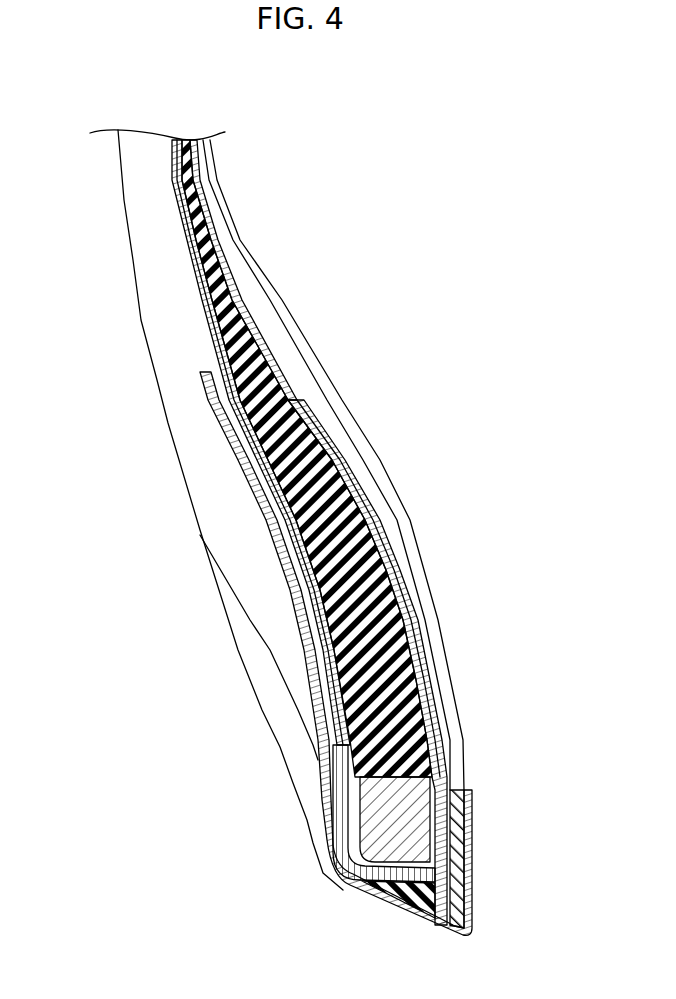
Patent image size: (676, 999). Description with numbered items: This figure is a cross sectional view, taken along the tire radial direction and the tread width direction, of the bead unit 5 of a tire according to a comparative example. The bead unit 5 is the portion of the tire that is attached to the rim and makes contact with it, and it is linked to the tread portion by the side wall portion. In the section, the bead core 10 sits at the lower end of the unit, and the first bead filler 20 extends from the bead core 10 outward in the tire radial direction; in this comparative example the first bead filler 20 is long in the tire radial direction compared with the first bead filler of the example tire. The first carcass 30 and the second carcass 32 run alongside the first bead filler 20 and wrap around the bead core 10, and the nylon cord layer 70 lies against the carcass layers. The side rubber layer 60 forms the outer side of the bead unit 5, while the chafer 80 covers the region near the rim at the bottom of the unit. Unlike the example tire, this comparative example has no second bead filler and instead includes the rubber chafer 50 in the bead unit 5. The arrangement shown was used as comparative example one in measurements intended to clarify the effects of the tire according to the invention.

The bead unit 5 is at (100, 578).
The bead core 10 is at (420, 818).
The first bead filler 20 is at (397, 658).
The first carcass 30 is at (240, 300).
The second carcass 32 is at (197, 282).
The rubber chafer 50 is at (262, 677).
The side rubber layer 60 is at (195, 423).
The nylon cord layer 70 is at (337, 480).
The chafer 80 is at (468, 888).